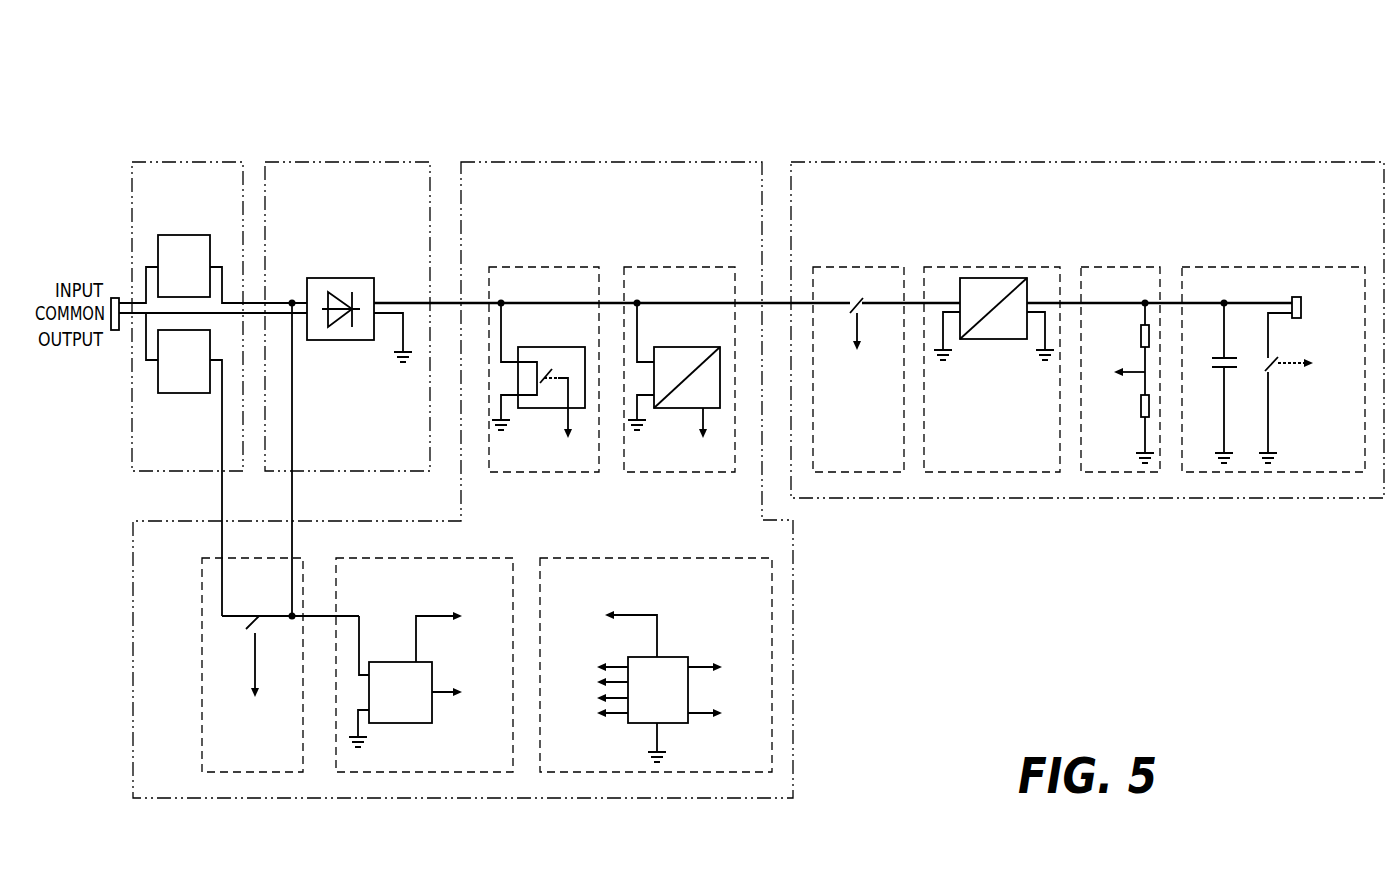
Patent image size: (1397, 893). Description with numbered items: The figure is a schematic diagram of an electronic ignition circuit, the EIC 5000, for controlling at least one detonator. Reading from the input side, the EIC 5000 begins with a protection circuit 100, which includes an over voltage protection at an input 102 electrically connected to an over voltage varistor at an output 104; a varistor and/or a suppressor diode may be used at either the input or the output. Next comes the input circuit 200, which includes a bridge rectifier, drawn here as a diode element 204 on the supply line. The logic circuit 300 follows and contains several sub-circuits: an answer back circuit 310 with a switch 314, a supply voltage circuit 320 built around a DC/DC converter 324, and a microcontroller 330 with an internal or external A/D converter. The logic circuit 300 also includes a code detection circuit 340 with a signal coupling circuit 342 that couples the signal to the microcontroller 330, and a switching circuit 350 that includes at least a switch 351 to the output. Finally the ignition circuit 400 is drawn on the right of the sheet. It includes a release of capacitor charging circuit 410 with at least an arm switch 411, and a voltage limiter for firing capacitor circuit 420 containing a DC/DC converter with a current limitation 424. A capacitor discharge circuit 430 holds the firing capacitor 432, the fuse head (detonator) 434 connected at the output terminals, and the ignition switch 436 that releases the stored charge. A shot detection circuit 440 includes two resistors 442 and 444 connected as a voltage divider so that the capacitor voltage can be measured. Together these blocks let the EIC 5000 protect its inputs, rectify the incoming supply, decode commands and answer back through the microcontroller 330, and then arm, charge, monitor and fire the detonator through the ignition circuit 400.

The EIC 5000 is at (722, 64).
The protection circuit 100 is at (142, 162).
The over voltage protection at an input 102 is at (158, 245).
The over voltage varistor at an output 104 is at (158, 383).
The input circuit 200 is at (274, 162).
The diode 204 is at (340, 278).
The logic circuit 300 is at (473, 162).
The answer back circuit 310 is at (527, 267).
The switch 314 is at (533, 348).
The supply voltage circuit 320 is at (662, 267).
The DC/DC converter 324 is at (671, 348).
The microcontroller 330 is at (672, 657).
The code detection circuit 340 is at (493, 558).
The signal coupling circuit 342 is at (393, 662).
The switching circuit 350 is at (202, 582).
The switch 351 is at (250, 616).
The ignition circuit 400 is at (808, 162).
The release of capacitor charging circuit 410 is at (835, 267).
The arm switch 411 is at (858, 298).
The voltage limiter for firing capacitor circuit 420 is at (960, 267).
The DC/DC converter with a current limitation 424 is at (975, 339).
The capacitor discharge circuit 430 is at (1242, 267).
The firing capacitor 432 is at (1212, 360).
The fuse head (detonator) 434 is at (1297, 297).
The ignition switch 436 is at (1268, 371).
The shot detection circuit 440 is at (1103, 267).
The resistor 442 is at (1141, 339).
The resistor 444 is at (1141, 410).